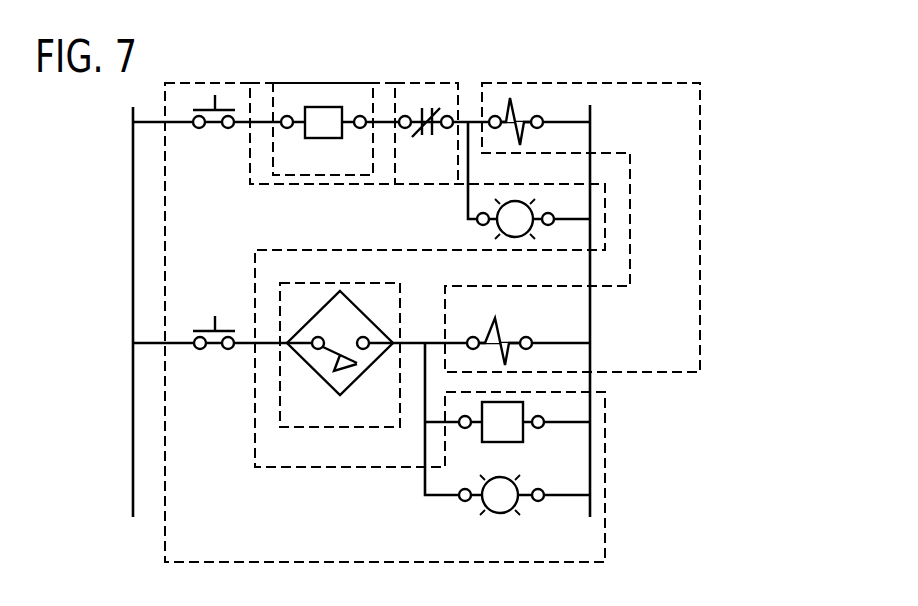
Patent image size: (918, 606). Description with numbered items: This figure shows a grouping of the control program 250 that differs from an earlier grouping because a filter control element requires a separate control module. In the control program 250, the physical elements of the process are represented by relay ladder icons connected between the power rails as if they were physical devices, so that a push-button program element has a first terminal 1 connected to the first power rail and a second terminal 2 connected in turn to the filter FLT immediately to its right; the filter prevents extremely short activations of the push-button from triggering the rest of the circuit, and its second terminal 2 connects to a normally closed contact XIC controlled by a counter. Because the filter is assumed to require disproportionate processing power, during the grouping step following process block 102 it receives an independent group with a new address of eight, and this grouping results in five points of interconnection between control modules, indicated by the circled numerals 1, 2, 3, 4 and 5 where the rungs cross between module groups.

The control program 250 is at (722, 118).
The first terminal 1 is at (262, 100).
The second terminal 2 is at (383, 100).
The step 3 contact 3 is at (468, 100).
The step 4 pushbutton contact 4 is at (269, 328).
The step 5 contact 5 is at (411, 328).
The process block 102 is at (435, 70).